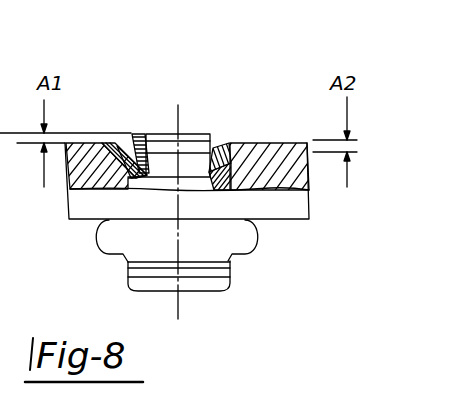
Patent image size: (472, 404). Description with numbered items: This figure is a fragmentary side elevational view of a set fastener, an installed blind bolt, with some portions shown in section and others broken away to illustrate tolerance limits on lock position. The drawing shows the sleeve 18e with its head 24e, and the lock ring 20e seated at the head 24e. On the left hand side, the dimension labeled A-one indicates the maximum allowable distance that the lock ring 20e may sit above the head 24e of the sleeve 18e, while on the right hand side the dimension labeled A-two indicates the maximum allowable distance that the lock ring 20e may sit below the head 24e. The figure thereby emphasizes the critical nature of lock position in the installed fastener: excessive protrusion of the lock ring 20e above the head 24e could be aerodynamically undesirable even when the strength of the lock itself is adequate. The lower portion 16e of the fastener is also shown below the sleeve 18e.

The lower flanged portion 16e is at (223, 290).
The sleeve 18e is at (250, 238).
The lock ring 20e is at (138, 136).
The head 24e is at (114, 150).